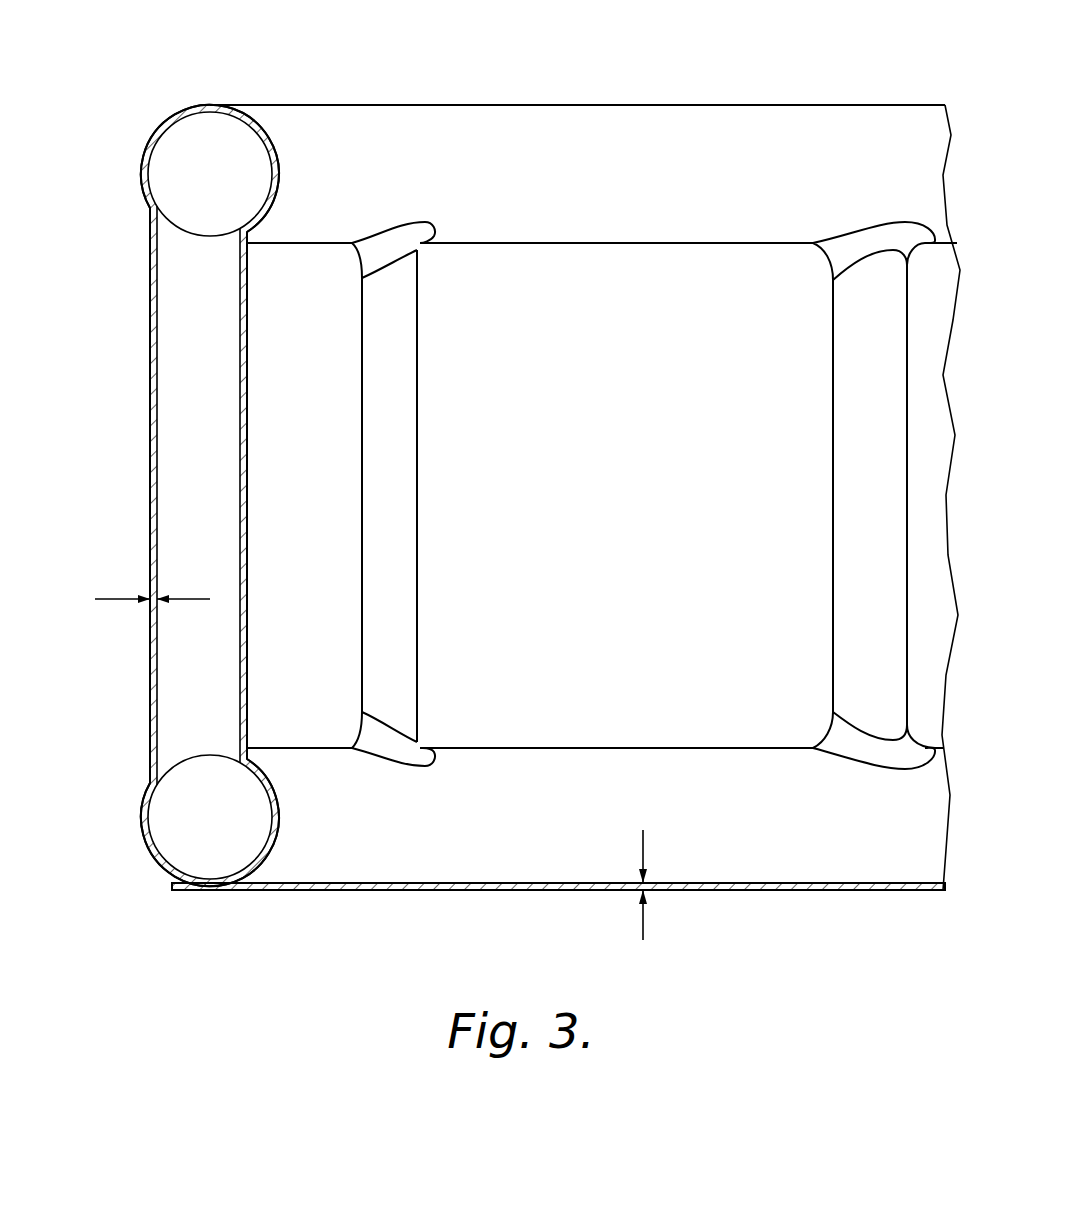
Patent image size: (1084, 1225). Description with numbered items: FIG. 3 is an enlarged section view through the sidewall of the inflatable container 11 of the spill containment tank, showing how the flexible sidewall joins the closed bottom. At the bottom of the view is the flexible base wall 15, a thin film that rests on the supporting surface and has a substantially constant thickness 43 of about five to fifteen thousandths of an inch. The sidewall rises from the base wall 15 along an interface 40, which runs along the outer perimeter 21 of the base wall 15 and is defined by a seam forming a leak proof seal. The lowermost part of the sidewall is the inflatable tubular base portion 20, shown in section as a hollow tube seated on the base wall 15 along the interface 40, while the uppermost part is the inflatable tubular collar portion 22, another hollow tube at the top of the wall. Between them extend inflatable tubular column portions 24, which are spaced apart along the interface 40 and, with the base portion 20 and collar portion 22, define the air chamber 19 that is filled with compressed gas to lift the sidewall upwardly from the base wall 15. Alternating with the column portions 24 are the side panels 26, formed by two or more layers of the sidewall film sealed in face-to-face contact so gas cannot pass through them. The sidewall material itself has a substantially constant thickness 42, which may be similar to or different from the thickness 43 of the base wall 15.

The inflatable container 11 is at (648, 103).
The base wall 15 is at (433, 888).
The air chamber 19 is at (200, 175).
The tubular base portion 20 is at (276, 796).
The outer perimeter 21 is at (172, 887).
The tubular collar portion 22 is at (266, 131).
The tubular column portions 24 is at (148, 392).
The side panels 26 is at (555, 302).
The interface 40 is at (195, 890).
The thickness 42 is at (108, 600).
The thickness 43 is at (643, 928).